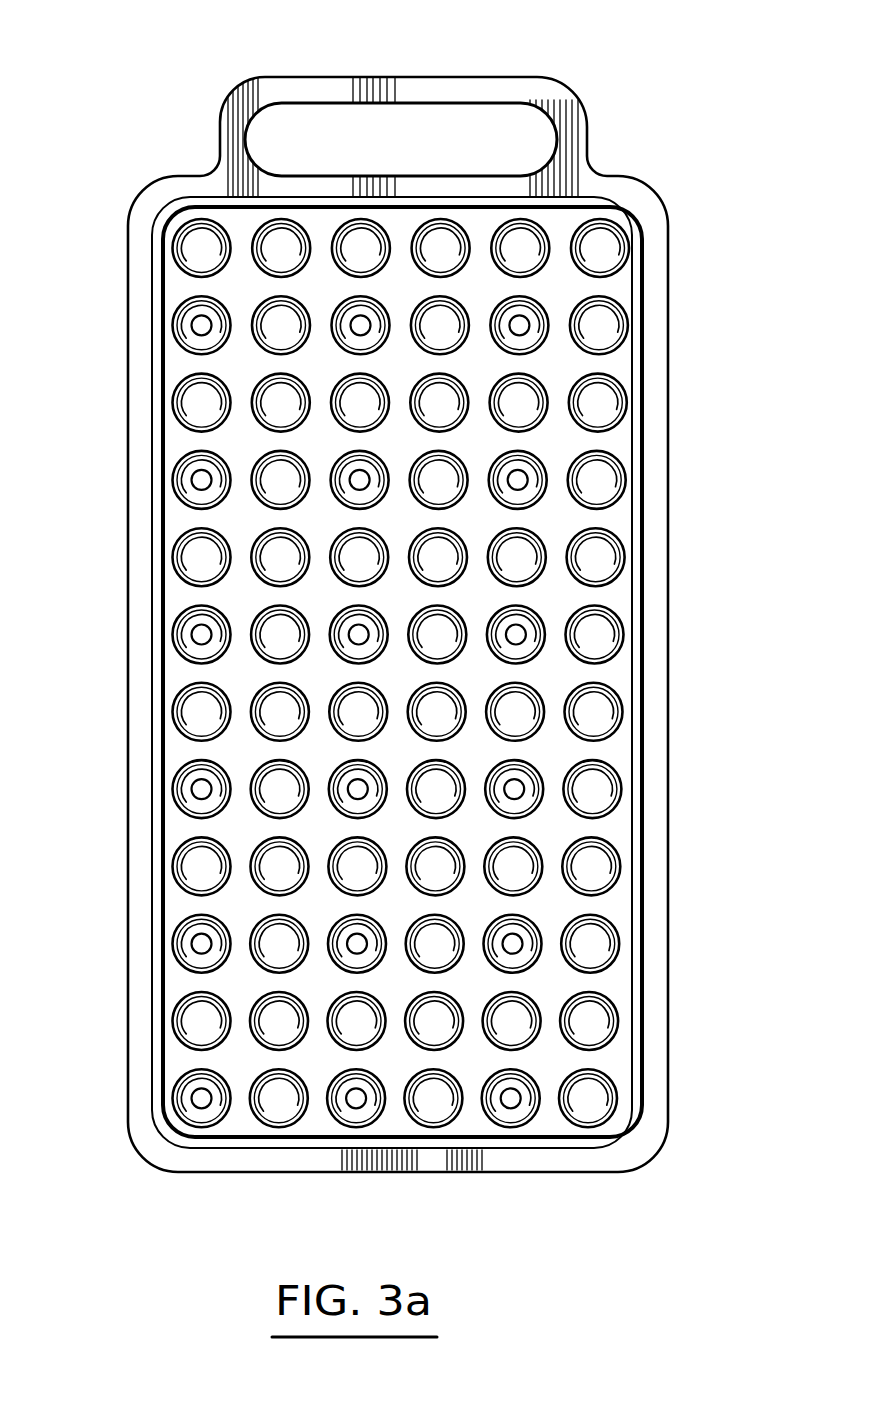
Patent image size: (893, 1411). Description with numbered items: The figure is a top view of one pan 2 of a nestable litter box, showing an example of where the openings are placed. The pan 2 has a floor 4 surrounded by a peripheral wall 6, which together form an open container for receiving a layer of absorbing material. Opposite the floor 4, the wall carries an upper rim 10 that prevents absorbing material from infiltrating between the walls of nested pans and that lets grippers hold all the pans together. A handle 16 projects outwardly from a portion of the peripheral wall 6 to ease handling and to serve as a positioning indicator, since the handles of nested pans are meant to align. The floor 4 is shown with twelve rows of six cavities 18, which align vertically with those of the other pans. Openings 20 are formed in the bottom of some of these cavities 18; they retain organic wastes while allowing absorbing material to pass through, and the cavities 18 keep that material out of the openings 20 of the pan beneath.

The pan 2 is at (405, 586).
The floor 4 is at (605, 828).
The peripheral wall 6 is at (637, 628).
The upper rim 10 is at (657, 700).
The handle 16 is at (563, 97).
The cavity 18 is at (198, 1025).
The opening 20 is at (200, 944).